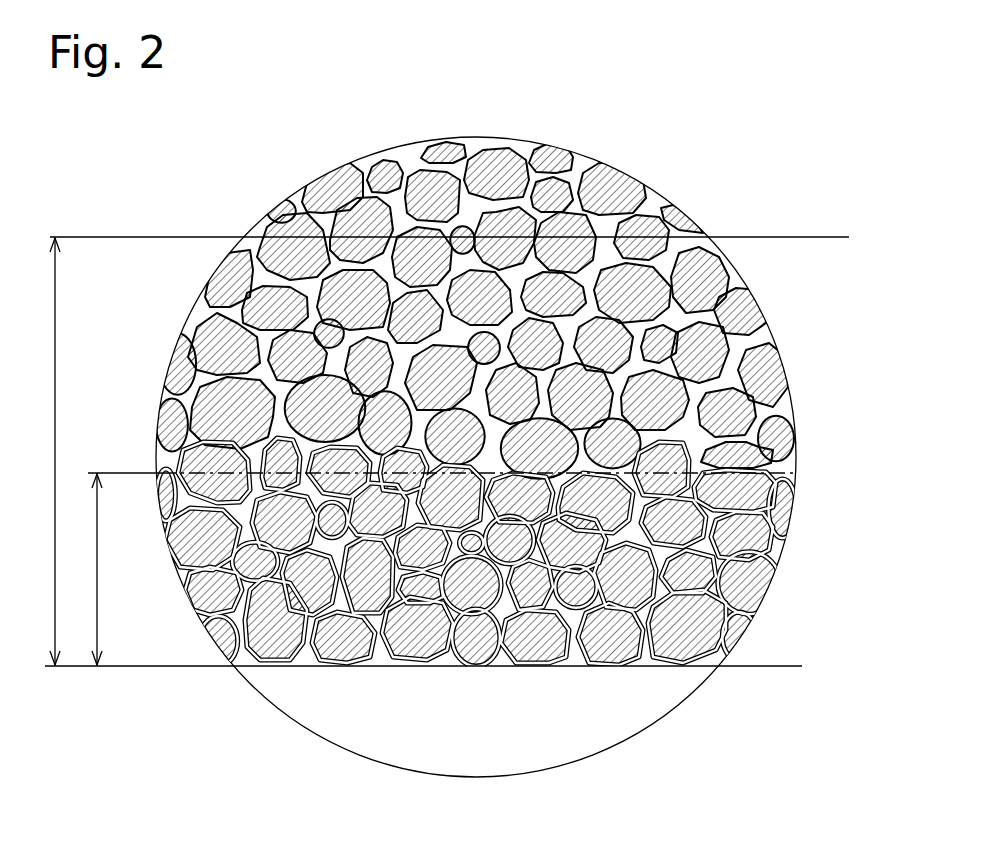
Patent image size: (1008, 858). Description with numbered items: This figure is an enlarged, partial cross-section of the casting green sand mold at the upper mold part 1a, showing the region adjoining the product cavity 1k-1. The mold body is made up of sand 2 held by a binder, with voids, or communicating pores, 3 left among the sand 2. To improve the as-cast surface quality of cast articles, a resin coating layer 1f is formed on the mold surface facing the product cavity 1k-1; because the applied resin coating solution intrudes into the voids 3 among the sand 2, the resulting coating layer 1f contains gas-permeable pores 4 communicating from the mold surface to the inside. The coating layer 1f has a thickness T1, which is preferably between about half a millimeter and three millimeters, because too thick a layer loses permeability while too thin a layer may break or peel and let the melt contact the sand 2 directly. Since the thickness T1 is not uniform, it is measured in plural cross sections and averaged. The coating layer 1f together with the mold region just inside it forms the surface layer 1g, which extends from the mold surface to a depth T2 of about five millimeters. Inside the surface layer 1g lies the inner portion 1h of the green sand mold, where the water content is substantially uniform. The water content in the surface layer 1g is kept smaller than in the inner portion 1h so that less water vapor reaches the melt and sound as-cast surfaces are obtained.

The upper mold part 1a is at (700, 193).
The sand 2 is at (493, 170).
The voids (communicating pores) 3 is at (566, 175).
The gas-permeable pores 4 is at (576, 657).
The inner portion 1h is at (858, 237).
The surface layer 1g is at (858, 239).
The coating layer 1f is at (809, 473).
The product cavity 1k-1 is at (501, 735).
The thickness of the coating layer T1 is at (85, 569).
The depth of the surface layer T2 is at (43, 451).